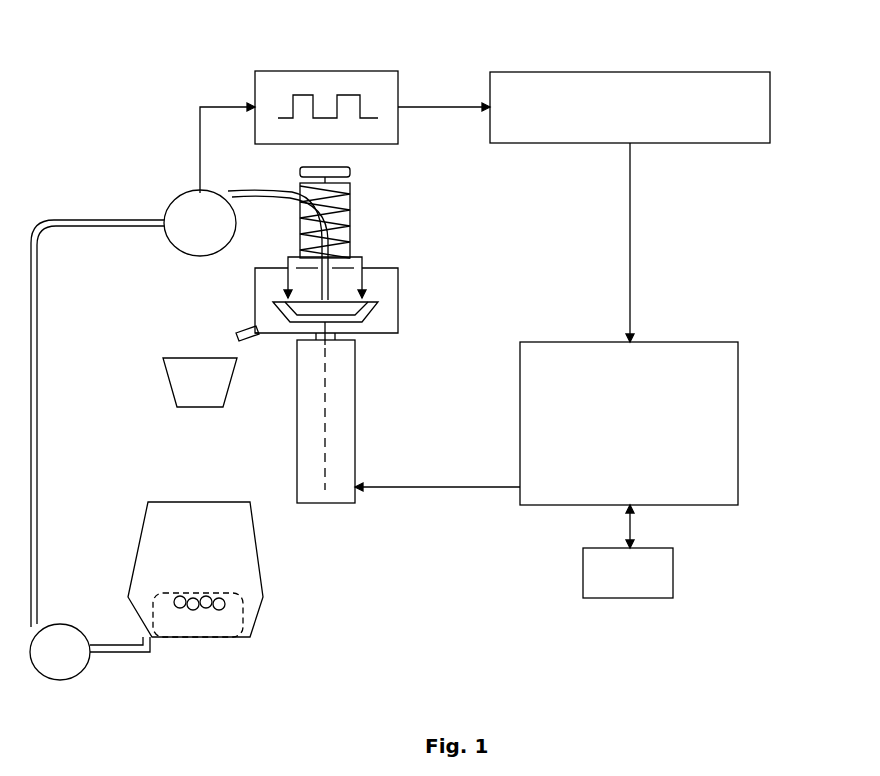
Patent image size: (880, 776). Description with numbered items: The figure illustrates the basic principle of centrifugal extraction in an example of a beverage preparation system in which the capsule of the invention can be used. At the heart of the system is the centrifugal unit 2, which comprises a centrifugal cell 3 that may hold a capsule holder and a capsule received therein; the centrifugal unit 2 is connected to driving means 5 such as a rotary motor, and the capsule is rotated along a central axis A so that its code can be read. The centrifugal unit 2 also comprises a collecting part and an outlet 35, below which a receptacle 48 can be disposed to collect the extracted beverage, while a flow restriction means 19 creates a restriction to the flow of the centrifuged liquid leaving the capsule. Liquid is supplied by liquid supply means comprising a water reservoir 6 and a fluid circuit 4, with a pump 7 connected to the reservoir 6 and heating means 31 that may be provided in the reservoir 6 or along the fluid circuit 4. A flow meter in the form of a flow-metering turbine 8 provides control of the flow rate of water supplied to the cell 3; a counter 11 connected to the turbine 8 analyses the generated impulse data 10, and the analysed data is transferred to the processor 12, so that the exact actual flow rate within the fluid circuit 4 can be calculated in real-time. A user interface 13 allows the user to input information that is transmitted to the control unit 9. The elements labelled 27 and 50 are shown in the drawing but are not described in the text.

The centrifugal unit 2 is at (387, 333).
The centrifugal cell 3 is at (381, 317).
The fluid circuit 4 is at (88, 220).
The driving means 5 is at (320, 505).
The water reservoir 6 is at (268, 597).
The pump 7 is at (60, 682).
The flow-metering turbine 8 is at (179, 196).
The control unit 9 is at (778, 182).
The impulse data 10 is at (278, 71).
The counter 11 is at (770, 80).
The processor 12 is at (738, 350).
The user interface 13 is at (673, 560).
The flow restriction means 19 is at (372, 278).
The coil 27 is at (352, 205).
The heating means 31 is at (165, 632).
The outlet 35 is at (238, 331).
The receptacle 48 is at (165, 377).
The cap 50 is at (356, 172).
The central axis A is at (338, 415).